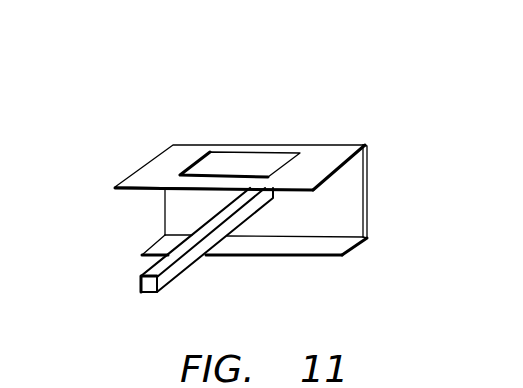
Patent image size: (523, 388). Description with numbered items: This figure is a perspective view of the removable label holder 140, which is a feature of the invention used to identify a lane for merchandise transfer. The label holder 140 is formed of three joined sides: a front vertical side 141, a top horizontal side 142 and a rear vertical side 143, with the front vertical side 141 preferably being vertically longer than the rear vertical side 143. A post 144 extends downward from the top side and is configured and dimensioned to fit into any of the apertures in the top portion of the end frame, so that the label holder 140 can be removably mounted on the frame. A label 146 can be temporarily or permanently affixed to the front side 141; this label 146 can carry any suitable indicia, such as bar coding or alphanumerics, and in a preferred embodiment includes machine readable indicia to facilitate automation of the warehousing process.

The label holder 140 is at (261, 153).
The front vertical side 141 is at (323, 152).
The top horizontal side 142 is at (369, 187).
The rear vertical side 143 is at (362, 240).
The post 144 is at (143, 288).
The label 146 is at (213, 162).